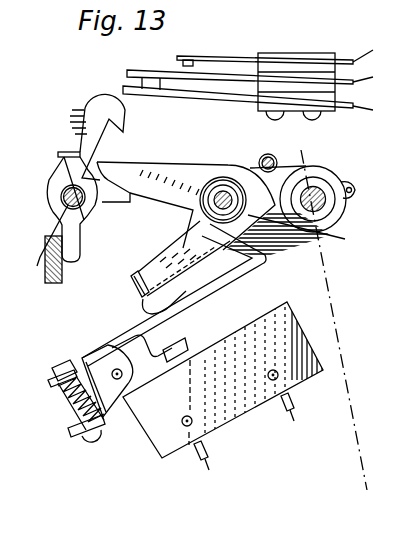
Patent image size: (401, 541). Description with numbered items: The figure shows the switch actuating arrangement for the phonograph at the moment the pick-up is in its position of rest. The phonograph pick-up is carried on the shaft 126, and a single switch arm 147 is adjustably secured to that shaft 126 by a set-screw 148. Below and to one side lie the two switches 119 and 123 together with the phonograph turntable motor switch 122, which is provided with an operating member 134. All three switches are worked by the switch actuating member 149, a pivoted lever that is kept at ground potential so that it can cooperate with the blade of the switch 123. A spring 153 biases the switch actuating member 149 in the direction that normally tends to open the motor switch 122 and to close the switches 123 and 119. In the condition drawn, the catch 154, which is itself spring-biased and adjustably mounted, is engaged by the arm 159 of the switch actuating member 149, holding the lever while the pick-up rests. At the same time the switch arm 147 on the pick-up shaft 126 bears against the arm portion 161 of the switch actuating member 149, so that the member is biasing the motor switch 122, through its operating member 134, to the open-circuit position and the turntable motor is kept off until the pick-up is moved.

The switch 119 is at (178, 62).
The switch 123 is at (128, 84).
The catch 154 is at (78, 123).
The arm 159 is at (112, 173).
The switch actuating member 149 is at (172, 195).
The spring 153 is at (221, 176).
The shaft 126 is at (311, 194).
The set-screw 148 is at (348, 185).
The switch arm 147 is at (153, 267).
The arm portion 161 is at (150, 300).
The operating member 134 is at (145, 324).
The phonograph turntable motor switch 122 is at (222, 424).